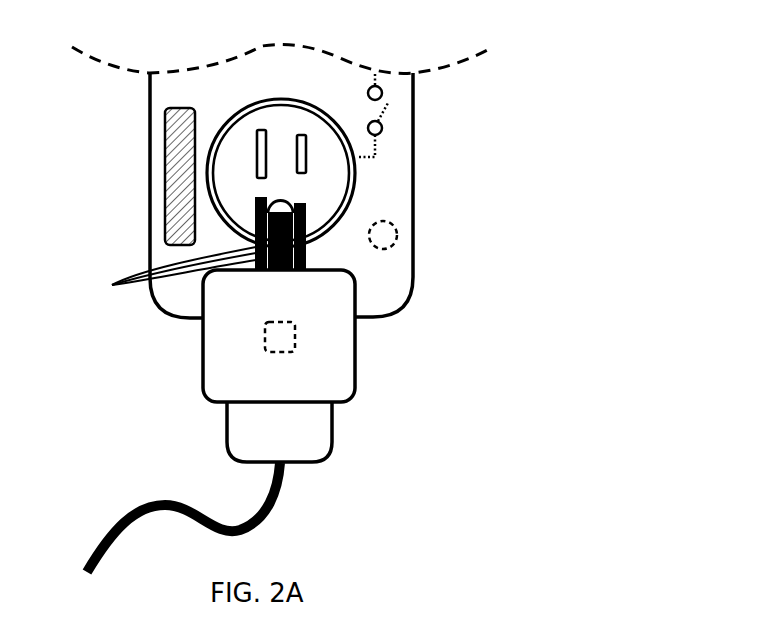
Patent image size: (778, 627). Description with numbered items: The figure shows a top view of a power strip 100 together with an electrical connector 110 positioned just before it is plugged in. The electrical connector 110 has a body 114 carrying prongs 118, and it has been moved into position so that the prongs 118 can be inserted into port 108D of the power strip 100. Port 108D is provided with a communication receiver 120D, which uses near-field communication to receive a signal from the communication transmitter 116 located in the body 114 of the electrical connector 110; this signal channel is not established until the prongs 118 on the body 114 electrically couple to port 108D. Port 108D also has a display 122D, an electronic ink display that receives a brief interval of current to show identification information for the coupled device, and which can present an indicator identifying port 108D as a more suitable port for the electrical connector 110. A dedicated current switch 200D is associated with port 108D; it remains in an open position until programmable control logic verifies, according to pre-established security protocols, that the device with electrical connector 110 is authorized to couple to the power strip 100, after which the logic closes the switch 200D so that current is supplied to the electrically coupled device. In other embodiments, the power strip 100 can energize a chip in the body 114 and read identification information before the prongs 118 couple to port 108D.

The power strip 100 is at (131, 174).
The port 108D is at (356, 175).
The switch 200D is at (389, 120).
The communication receiver 120D is at (395, 246).
The display 122D is at (167, 190).
The prongs 118 is at (173, 282).
The body 114 is at (203, 393).
The communication transmitter 116 is at (295, 335).
The electrical connector 110 is at (367, 434).